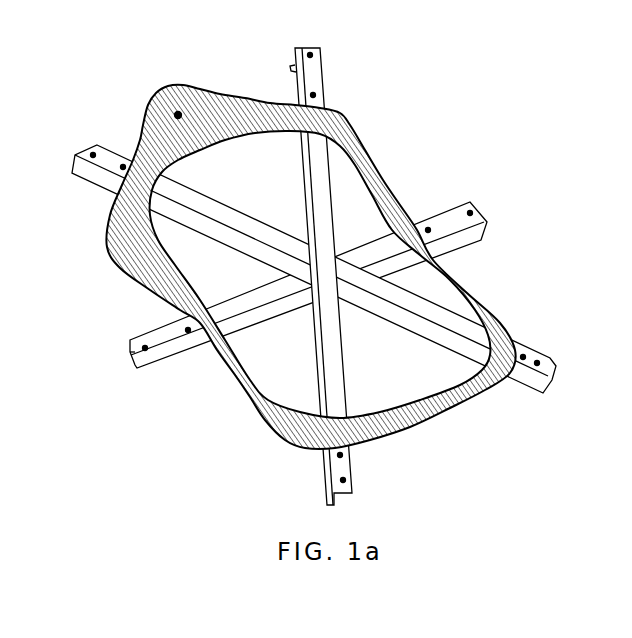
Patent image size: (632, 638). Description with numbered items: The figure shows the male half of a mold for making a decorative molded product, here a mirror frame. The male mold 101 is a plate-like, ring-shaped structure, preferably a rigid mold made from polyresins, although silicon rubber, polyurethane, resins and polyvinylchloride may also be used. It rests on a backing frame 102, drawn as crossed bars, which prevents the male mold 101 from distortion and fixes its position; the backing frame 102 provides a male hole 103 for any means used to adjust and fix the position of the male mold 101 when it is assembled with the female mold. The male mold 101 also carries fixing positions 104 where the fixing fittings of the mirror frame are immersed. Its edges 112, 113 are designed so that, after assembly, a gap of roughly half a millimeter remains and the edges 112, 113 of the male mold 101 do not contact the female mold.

The male mold 101 is at (377, 167).
The backing frame 102 is at (450, 223).
The male hole 103 is at (522, 355).
The fixing positions 104 is at (178, 115).
The edge 112 is at (340, 113).
The edge 113 is at (467, 277).